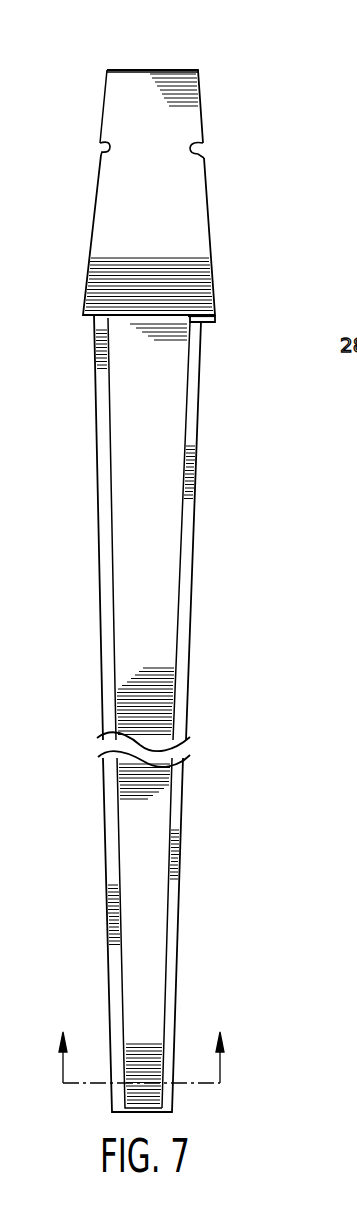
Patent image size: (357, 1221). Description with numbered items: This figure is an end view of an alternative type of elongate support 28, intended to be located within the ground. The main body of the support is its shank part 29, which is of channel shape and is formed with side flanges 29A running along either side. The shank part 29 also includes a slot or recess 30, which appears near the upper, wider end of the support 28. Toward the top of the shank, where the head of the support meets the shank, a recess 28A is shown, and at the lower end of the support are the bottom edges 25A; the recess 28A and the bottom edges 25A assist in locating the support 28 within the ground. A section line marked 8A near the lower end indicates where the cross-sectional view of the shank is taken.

The slot or recess 30 is at (102, 152).
The elongate support 28 is at (84, 345).
The recess 28A is at (202, 320).
The shank part 29 is at (140, 643).
The side flanges 29A is at (178, 672).
The bottom edges 25A is at (148, 1113).
The section line 8A- 8A is at (143, 1046).